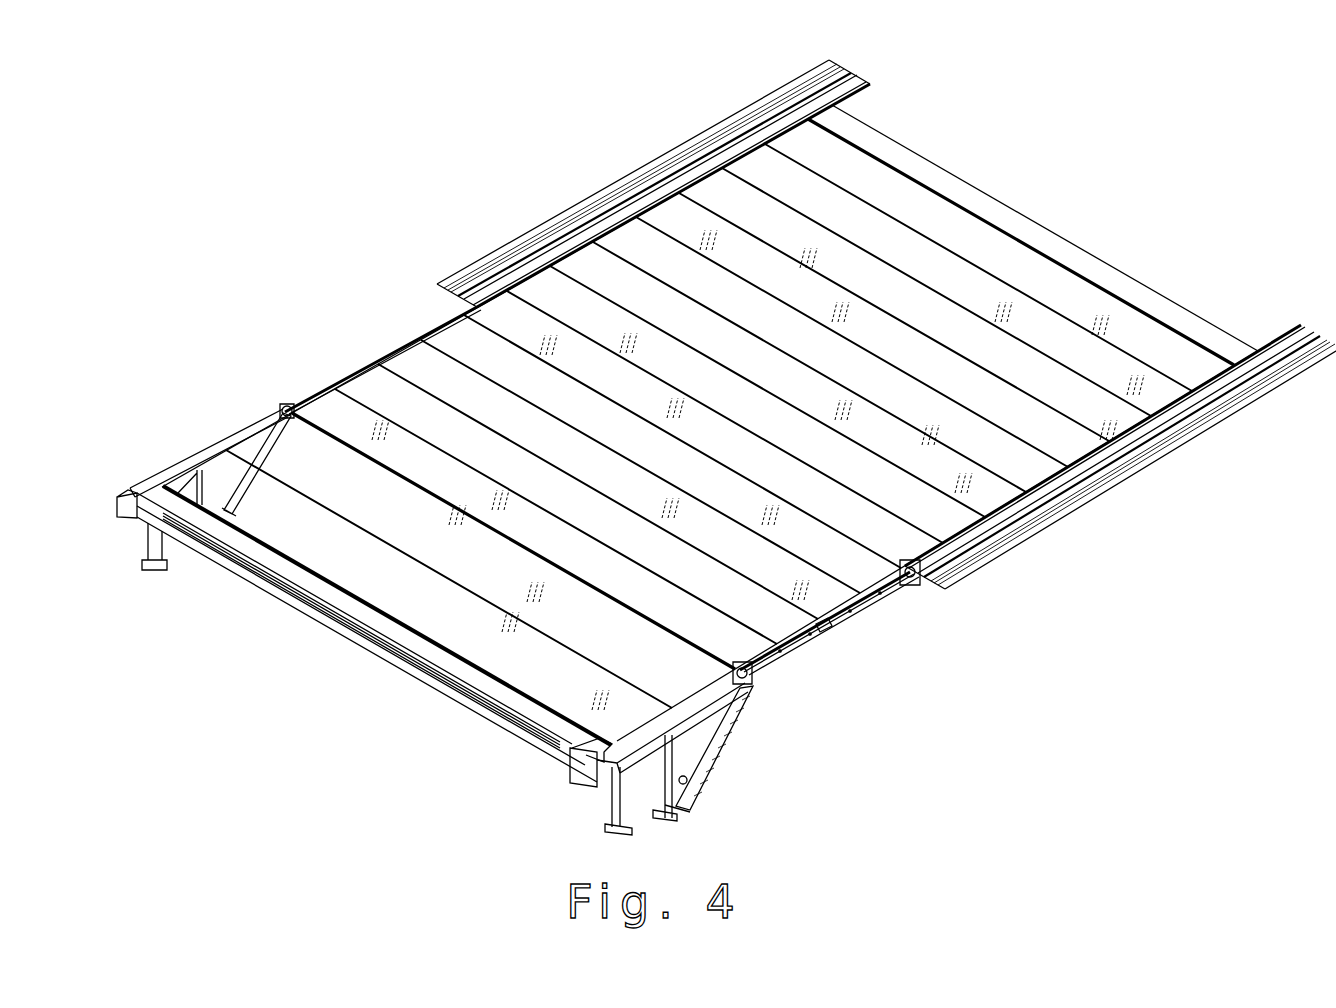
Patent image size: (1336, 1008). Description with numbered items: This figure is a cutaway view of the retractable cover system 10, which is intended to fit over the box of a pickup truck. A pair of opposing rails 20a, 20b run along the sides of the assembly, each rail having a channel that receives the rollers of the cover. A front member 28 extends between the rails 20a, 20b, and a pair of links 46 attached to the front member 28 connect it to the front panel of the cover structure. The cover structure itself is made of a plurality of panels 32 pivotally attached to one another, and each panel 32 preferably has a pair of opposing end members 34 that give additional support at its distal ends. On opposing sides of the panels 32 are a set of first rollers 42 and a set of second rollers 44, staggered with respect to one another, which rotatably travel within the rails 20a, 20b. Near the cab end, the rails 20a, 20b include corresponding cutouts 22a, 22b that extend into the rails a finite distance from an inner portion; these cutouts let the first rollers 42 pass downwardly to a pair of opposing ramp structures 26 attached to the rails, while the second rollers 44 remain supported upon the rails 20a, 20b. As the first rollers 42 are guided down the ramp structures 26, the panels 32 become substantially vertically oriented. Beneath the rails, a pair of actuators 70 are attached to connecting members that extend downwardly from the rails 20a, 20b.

The retractable cover system 10 is at (749, 441).
The rail 20a is at (1036, 533).
The rail 20b is at (577, 217).
The cutout 22a is at (740, 703).
The cutout 22b is at (257, 430).
The ramp structure 26 is at (243, 463).
The front member 28 is at (383, 642).
The panel 32 is at (493, 360).
The end member 34 is at (397, 347).
The first roller 42 is at (823, 627).
The second roller 44 is at (282, 410).
The link 46 is at (575, 750).
The actuator 70 is at (162, 570).